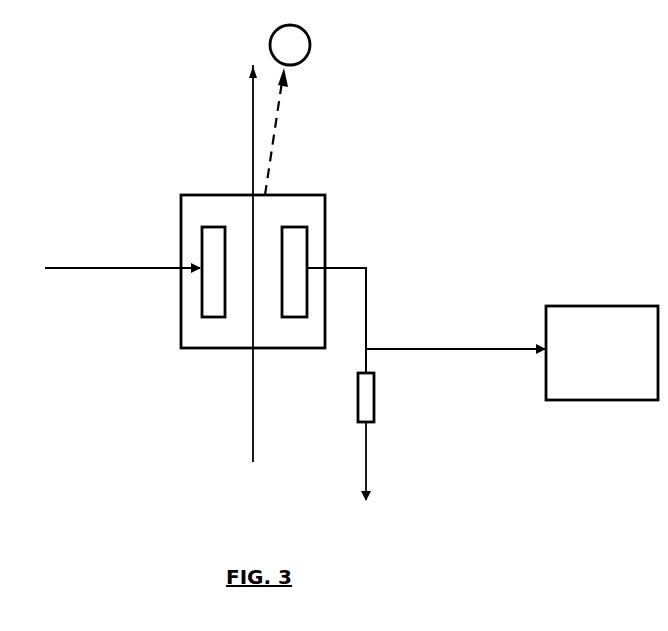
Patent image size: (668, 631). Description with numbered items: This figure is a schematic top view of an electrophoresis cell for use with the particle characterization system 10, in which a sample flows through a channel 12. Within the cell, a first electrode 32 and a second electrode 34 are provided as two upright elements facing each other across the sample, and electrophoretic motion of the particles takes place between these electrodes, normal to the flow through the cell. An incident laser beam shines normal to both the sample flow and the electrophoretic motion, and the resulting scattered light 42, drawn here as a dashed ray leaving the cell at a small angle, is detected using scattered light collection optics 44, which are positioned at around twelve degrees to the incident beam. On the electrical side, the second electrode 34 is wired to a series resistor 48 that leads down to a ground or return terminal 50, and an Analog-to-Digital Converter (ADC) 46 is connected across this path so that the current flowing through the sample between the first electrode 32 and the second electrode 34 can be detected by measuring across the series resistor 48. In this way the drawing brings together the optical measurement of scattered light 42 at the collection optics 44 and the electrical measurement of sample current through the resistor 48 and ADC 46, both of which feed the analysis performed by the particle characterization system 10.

The particle characterization system 10 is at (172, 519).
The channel 12 is at (197, 348).
The first electrode 32 is at (201, 240).
The second electrode 34 is at (306, 240).
The scattered light 42 is at (278, 112).
The scattered light collection optics 44 is at (275, 30).
The Analog-to-Digital Converter (ADC) 46 is at (604, 306).
The series resistor 48 is at (375, 395).
The ground or return terminal 50 is at (370, 492).